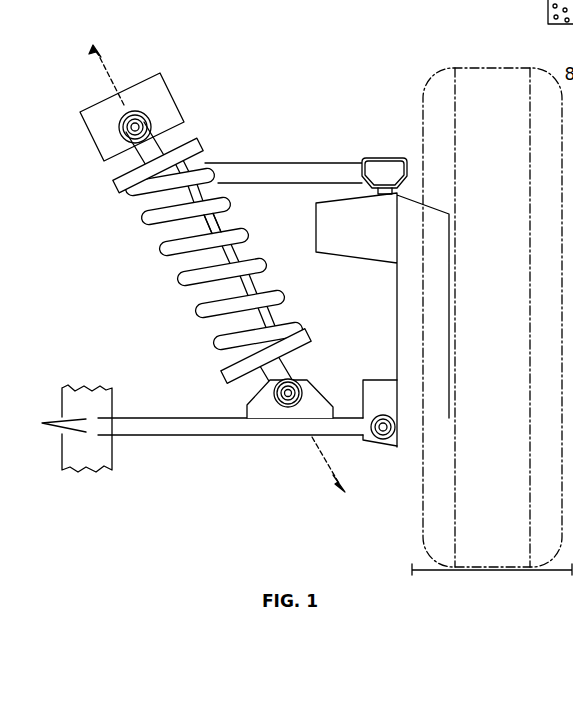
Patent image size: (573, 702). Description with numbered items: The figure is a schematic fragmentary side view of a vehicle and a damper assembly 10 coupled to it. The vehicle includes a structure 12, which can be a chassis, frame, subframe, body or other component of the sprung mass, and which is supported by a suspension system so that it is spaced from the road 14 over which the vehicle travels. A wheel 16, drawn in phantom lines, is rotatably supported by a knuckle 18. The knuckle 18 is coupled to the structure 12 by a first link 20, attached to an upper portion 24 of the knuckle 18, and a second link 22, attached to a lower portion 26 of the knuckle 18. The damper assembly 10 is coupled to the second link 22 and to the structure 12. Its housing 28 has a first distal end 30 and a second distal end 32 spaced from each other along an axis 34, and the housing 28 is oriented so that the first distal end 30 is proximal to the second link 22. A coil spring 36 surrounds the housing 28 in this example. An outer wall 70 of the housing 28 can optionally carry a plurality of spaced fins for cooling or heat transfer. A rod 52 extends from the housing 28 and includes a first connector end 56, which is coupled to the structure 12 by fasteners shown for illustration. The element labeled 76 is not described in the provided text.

The damper assembly 10 is at (240, 135).
The structure 12 is at (158, 80).
The road 14 is at (430, 567).
The wheel 16 is at (468, 66).
The knuckle 18 is at (410, 288).
The first link 20 is at (318, 165).
The second link 22 is at (190, 422).
The upper portion 24 is at (405, 207).
The lower portion 26 is at (448, 420).
The housing 28 is at (217, 255).
The first distal end 30 is at (237, 357).
The second distal end 32 is at (172, 230).
The axis 34 is at (103, 66).
The coil spring 36 is at (245, 237).
The rod 52 is at (160, 198).
The first connector end 56 is at (165, 118).
The outer wall 70 is at (258, 290).
The controller 76 is at (548, 6).